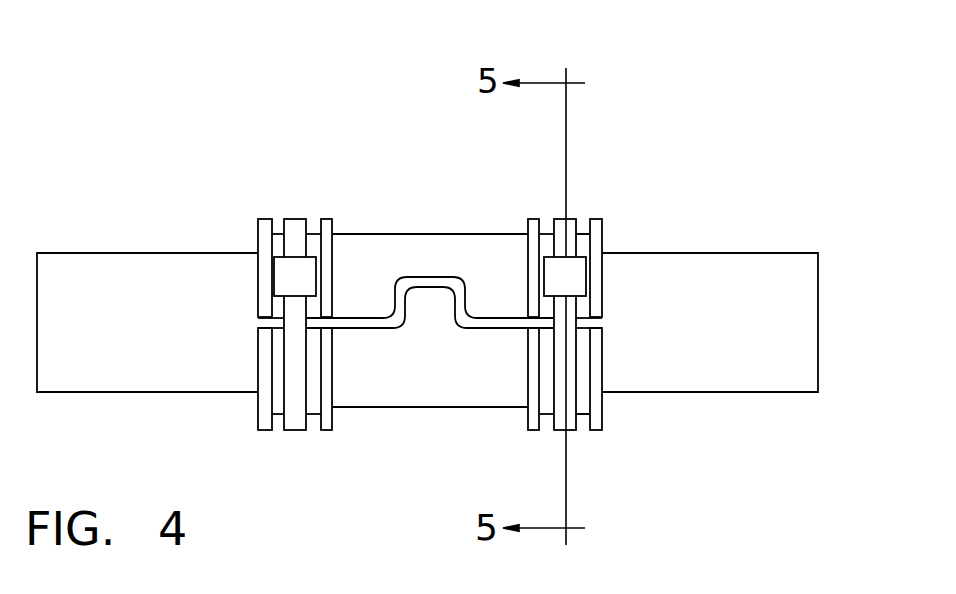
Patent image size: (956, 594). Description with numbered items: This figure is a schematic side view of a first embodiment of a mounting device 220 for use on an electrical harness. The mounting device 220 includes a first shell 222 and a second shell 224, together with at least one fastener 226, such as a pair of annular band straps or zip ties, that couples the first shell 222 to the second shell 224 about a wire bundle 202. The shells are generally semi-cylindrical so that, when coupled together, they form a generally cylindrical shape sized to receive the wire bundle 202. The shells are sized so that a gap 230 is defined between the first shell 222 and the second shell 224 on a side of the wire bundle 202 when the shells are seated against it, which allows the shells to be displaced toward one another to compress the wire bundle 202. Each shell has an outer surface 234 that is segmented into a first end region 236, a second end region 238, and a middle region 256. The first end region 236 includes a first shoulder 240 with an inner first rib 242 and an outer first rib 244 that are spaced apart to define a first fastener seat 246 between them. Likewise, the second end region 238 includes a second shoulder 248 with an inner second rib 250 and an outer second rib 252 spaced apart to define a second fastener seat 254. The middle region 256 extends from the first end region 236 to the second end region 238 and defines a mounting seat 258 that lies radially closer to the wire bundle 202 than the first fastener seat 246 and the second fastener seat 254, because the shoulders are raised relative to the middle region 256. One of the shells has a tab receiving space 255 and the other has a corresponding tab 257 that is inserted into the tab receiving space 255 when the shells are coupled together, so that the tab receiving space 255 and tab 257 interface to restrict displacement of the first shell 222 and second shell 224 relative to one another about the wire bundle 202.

The wire bundle 202 is at (758, 243).
The mounting device 220 is at (220, 145).
The first shell 222 is at (433, 233).
The second shell 224 is at (423, 414).
The fastener 226 is at (295, 218).
The gap 230 is at (256, 322).
The outer surface 234 is at (464, 234).
The first end region 236 is at (254, 225).
The second end region 238 is at (612, 223).
The first shoulder 240 is at (311, 223).
The inner first rib 242 is at (328, 222).
The outer first rib 244 is at (265, 232).
The first fastener seat 246 is at (278, 230).
The second shoulder 248 is at (547, 218).
The inner second rib 250 is at (533, 219).
The outer second rib 252 is at (603, 225).
The second fastener seat 254 is at (587, 232).
The tab receiving space 255 is at (432, 276).
The middle region 256 is at (443, 234).
The tab 257 is at (427, 313).
The mounting seat 258 is at (394, 234).